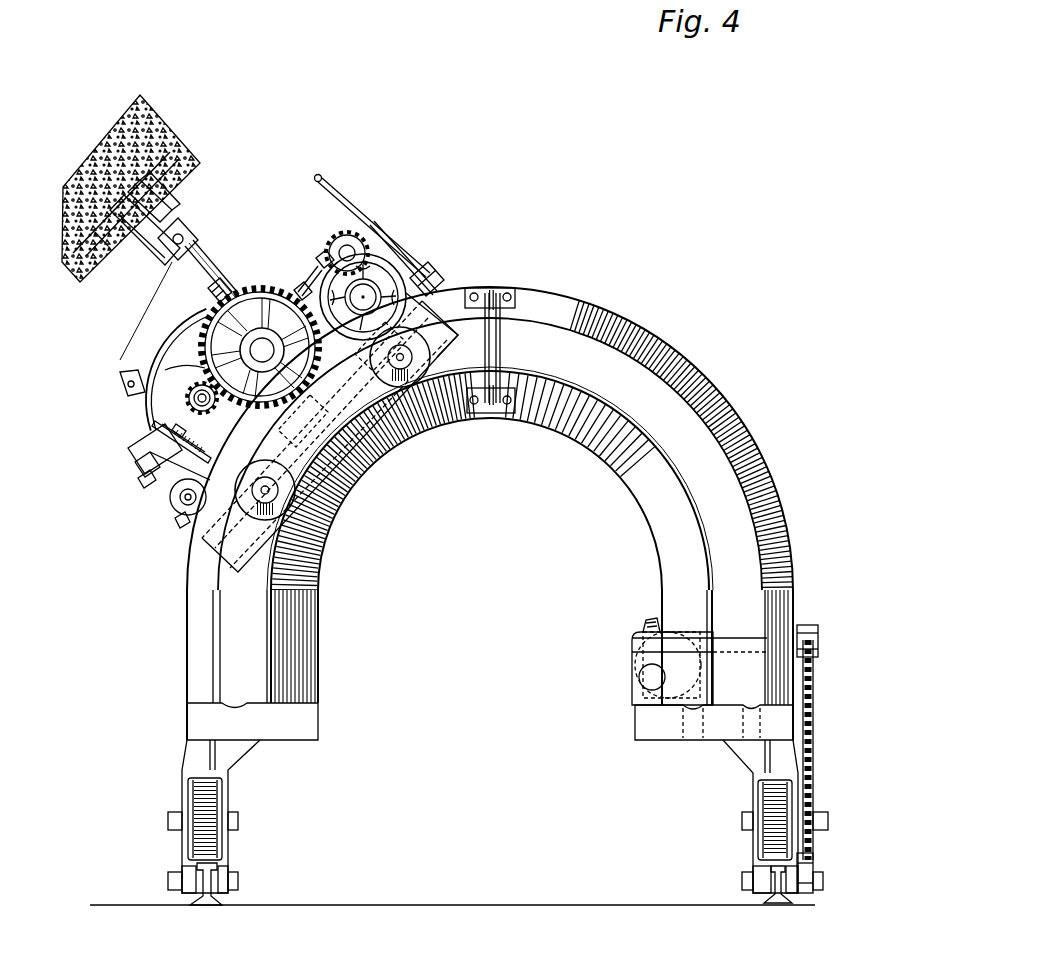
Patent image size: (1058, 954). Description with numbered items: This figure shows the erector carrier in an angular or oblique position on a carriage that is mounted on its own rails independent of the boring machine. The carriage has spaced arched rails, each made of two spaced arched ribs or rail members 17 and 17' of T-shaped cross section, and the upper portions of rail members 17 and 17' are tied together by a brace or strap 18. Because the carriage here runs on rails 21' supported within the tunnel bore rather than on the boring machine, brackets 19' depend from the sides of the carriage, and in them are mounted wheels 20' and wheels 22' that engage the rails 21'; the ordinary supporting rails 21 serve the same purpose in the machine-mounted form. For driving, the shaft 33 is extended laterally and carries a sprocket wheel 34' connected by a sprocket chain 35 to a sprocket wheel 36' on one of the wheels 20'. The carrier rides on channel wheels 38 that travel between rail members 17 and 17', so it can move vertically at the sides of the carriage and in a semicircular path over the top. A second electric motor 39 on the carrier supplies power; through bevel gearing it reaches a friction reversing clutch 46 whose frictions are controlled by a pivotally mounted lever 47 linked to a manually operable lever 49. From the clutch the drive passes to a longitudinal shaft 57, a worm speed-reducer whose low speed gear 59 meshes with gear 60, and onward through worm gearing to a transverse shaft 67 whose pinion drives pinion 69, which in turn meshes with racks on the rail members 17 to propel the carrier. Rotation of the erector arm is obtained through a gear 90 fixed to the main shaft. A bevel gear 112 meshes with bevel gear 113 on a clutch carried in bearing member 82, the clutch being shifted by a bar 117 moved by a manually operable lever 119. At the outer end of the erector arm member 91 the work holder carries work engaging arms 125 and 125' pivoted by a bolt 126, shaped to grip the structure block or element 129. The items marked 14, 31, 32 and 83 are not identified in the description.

The hub shaft 14 is at (262, 350).
The arched rail member 17 is at (475, 536).
The arched rail member 17' is at (490, 513).
The brace or strap 18 is at (498, 350).
The bracket 19' is at (490, 816).
The wheel 20' is at (498, 819).
The supporting rail 21 is at (753, 885).
The rail 21' is at (215, 897).
The wheel 22' is at (497, 895).
The bearing 31 is at (634, 670).
The set screw 32 is at (650, 616).
The shaft 33 is at (727, 638).
The sprocket wheel 34' is at (810, 620).
The sprocket chain 35 is at (812, 706).
The sprocket wheel 36' is at (816, 873).
The channel wheel 38 is at (420, 357).
The second electric motor 39 is at (380, 267).
The friction reversing clutch 46 is at (165, 342).
The pivotally mounted lever 47 is at (126, 390).
The manually operable lever 49 is at (226, 294).
The shaft 57 is at (133, 448).
The gear 59 is at (154, 425).
The gear 60 is at (253, 468).
The shaft 67 is at (192, 374).
The pinion 69 is at (188, 393).
The bearing member 82 is at (423, 265).
The rod 83 is at (350, 196).
The gear 90 is at (245, 291).
The erector arm member 91 is at (196, 262).
The bevel gear 112 is at (317, 256).
The bevel gear 113 is at (335, 237).
The bar 117 is at (388, 238).
The manually operable lever 119 is at (315, 180).
The work engaging arm 125 is at (126, 214).
The work engaging arm 125' is at (172, 197).
The bolt 126 is at (186, 244).
The structure block or element 129 is at (155, 122).